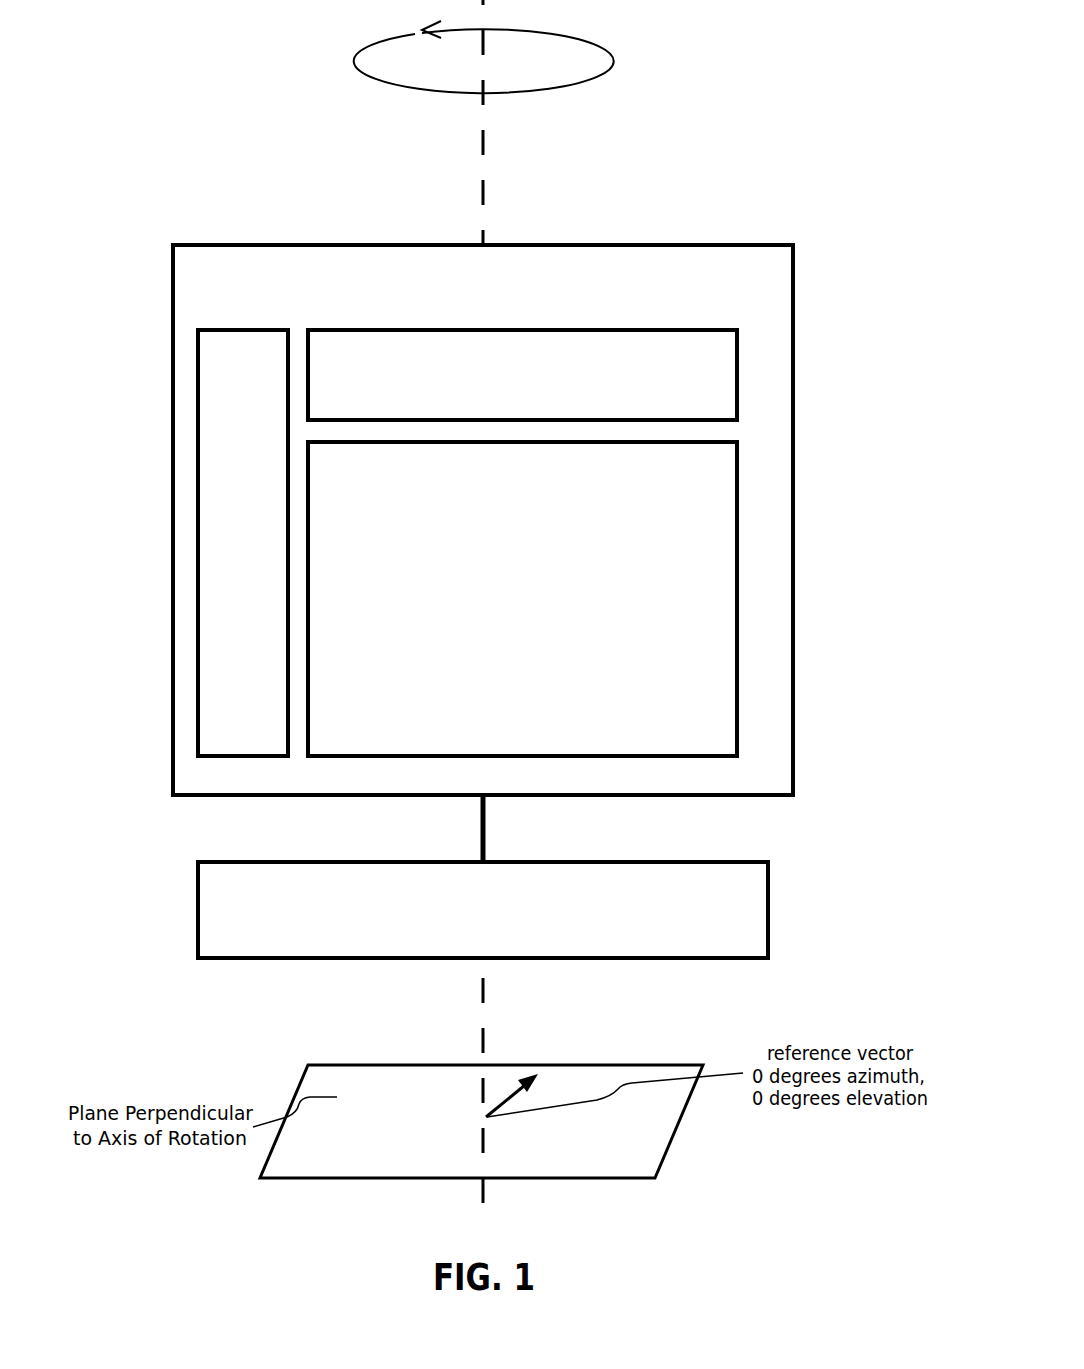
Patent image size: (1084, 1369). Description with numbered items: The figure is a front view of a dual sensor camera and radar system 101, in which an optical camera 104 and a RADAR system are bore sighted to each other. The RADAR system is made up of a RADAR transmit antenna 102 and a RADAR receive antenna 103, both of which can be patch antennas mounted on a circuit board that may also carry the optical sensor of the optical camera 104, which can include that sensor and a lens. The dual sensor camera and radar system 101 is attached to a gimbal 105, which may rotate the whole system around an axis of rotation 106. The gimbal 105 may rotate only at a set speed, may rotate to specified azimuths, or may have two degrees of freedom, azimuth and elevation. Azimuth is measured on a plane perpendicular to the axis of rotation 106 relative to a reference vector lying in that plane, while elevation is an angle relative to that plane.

The dual sensor camera and radar system 101 is at (500, 298).
The RADAR transmit antenna 102 is at (541, 409).
The RADAR receive antenna 103 is at (260, 747).
The optical camera 104 is at (540, 632).
The gimbal 105 is at (500, 944).
The axis of rotation 106 is at (530, 163).